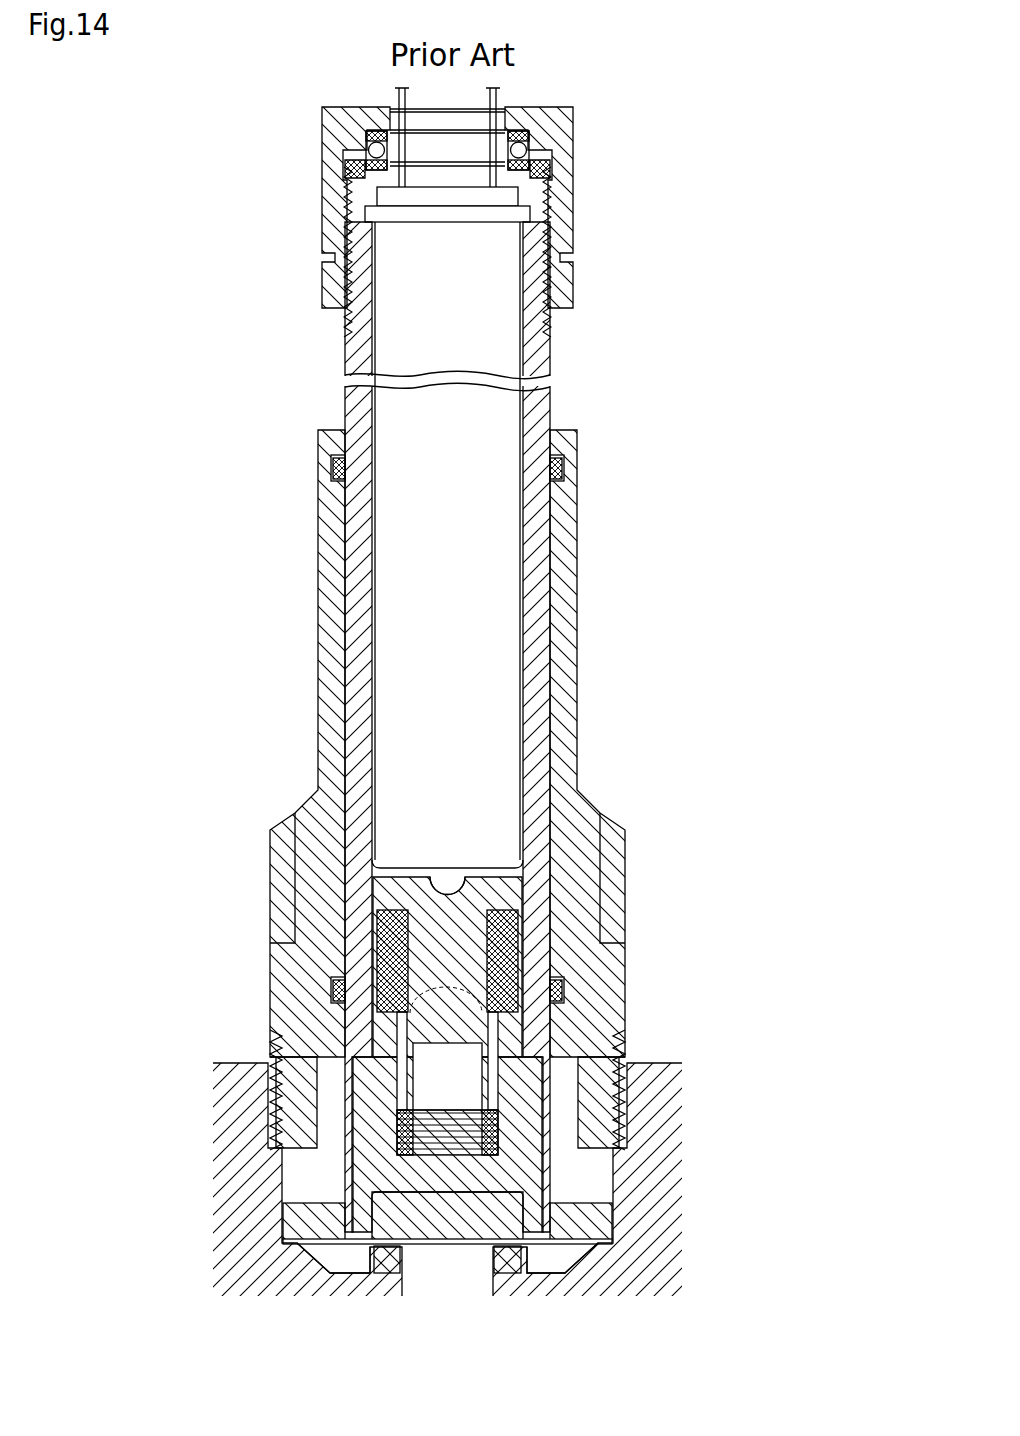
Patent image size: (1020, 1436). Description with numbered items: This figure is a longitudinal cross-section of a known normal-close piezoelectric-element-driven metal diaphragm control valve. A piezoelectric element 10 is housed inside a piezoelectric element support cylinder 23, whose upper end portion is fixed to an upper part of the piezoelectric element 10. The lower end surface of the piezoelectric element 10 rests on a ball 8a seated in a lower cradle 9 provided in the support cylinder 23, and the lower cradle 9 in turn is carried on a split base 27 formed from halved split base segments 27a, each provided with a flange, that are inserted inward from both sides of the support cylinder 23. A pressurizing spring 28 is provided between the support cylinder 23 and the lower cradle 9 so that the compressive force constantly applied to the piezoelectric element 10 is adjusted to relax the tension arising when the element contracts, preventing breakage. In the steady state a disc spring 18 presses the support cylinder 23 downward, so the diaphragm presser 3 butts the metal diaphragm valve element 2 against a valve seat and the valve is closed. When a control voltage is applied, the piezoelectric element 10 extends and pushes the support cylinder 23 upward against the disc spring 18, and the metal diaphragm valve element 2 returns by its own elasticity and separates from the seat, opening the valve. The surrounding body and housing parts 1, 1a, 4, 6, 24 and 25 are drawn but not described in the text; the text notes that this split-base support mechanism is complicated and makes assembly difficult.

The mounting base 1 is at (648, 1108).
The recess 1a is at (345, 1255).
The metal diaphragm valve element 2 is at (565, 1243).
The diaphragm presser 3 is at (427, 1220).
The plate 4 is at (595, 1238).
The seal ring 6 is at (505, 1262).
The ball 8a is at (448, 878).
The lower cradle 9 is at (510, 893).
The piezoelectric element 10 is at (465, 605).
The disc spring 18 is at (490, 1163).
The piezoelectric element support cylinder 23 is at (540, 410).
The housing 24 is at (588, 978).
The O-ring 25 is at (565, 726).
The split base 27 is at (305, 1105).
The split base segment 27a is at (287, 1187).
The pressurizing spring 28 is at (360, 945).